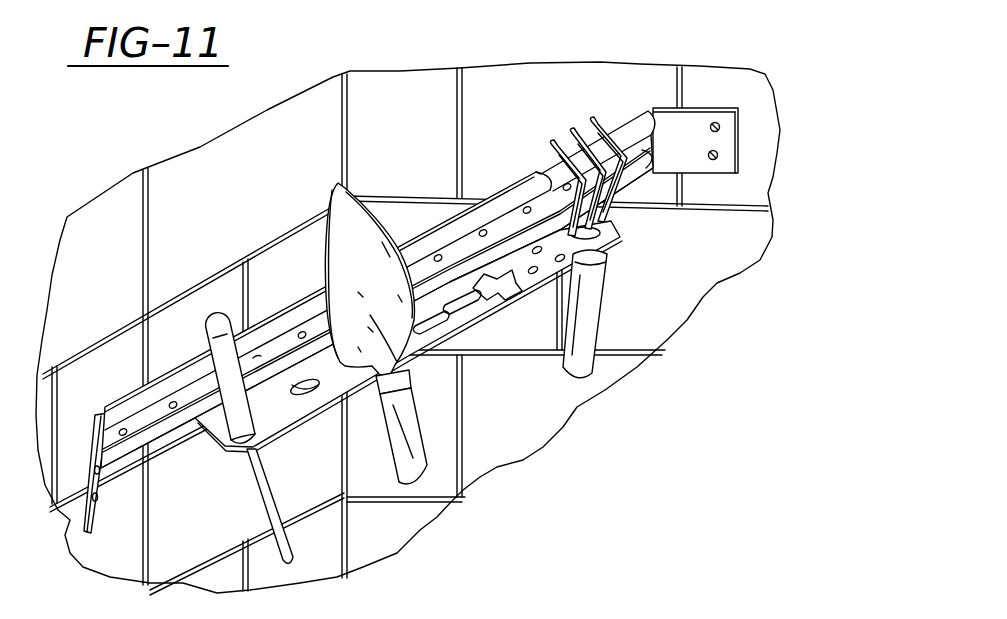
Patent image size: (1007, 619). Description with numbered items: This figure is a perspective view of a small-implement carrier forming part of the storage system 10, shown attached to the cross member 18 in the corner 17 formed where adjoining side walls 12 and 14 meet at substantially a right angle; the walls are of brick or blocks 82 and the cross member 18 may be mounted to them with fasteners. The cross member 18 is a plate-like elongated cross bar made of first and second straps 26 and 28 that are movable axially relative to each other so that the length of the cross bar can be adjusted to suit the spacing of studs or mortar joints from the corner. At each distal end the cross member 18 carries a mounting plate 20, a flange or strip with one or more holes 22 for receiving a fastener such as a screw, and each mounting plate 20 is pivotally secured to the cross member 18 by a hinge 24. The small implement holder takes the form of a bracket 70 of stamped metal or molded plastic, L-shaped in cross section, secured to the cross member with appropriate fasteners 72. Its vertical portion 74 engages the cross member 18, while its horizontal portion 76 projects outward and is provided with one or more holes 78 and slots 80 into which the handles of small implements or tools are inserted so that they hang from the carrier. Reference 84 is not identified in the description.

The storage system 10 is at (744, 316).
The side wall 12 is at (288, 180).
The side wall 14 is at (558, 108).
The corner 17 is at (373, 103).
The cross member 18 is at (420, 210).
The mounting plate 20 is at (83, 532).
The hole 22 is at (100, 494).
The hinge 24 is at (687, 108).
The first strap 26 is at (150, 417).
The second strap 28 is at (645, 147).
The bracket 70 is at (638, 247).
The fastener 72 is at (254, 358).
The vertical portion 74 is at (198, 359).
The horizontal portion 76 is at (473, 303).
The hole 78 is at (312, 388).
The slot 80 is at (413, 380).
The brick or block 82 is at (175, 175).
The grout line 84 is at (246, 293).